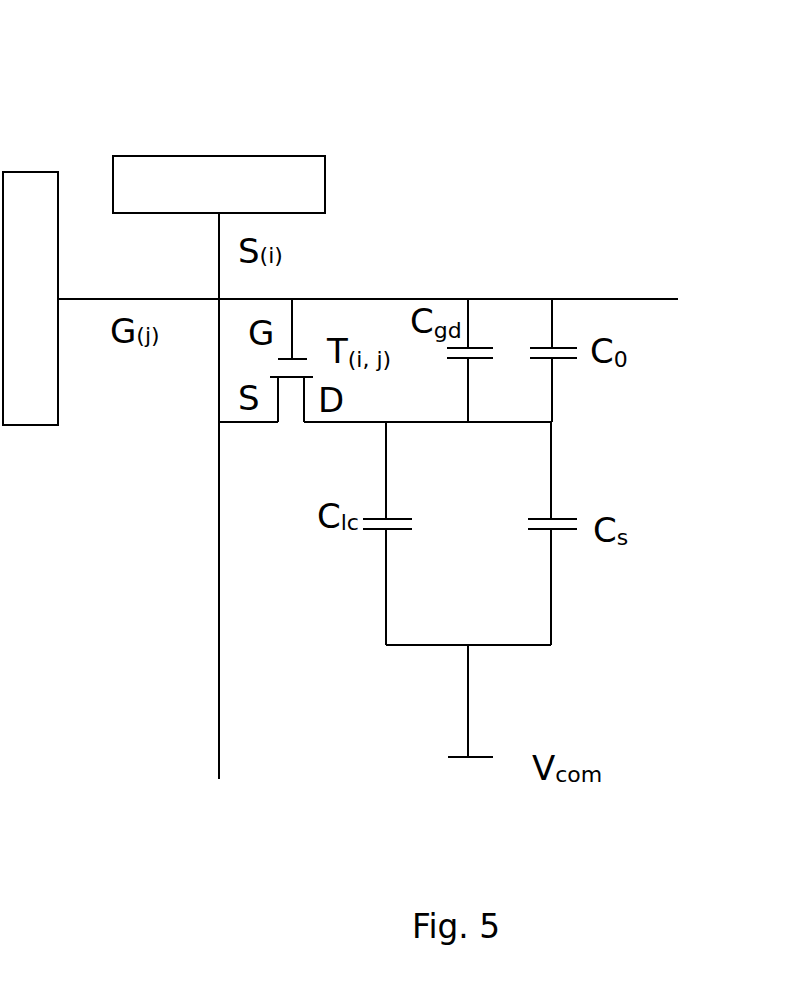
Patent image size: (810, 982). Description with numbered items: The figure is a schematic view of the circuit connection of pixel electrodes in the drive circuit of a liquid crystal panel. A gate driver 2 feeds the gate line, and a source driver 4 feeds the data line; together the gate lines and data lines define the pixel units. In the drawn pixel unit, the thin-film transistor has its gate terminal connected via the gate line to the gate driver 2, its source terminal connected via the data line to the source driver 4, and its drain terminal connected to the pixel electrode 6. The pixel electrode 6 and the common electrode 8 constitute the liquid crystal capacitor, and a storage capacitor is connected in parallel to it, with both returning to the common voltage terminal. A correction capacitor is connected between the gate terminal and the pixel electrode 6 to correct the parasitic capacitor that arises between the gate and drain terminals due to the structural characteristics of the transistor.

The gate driver 2 is at (30, 170).
The source driver 4 is at (198, 155).
The pixel electrode 6 is at (390, 518).
The common electrode 8 is at (390, 530).